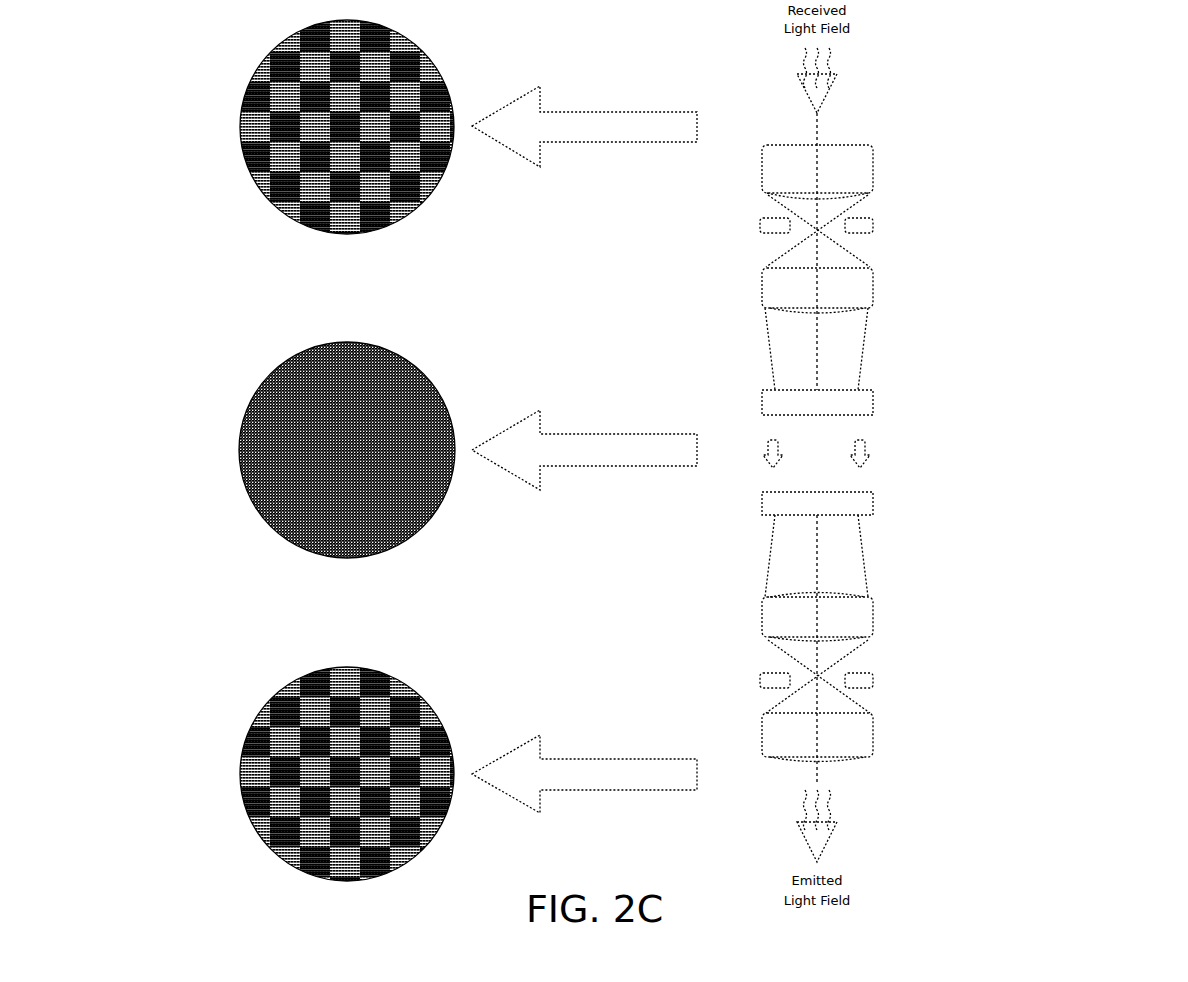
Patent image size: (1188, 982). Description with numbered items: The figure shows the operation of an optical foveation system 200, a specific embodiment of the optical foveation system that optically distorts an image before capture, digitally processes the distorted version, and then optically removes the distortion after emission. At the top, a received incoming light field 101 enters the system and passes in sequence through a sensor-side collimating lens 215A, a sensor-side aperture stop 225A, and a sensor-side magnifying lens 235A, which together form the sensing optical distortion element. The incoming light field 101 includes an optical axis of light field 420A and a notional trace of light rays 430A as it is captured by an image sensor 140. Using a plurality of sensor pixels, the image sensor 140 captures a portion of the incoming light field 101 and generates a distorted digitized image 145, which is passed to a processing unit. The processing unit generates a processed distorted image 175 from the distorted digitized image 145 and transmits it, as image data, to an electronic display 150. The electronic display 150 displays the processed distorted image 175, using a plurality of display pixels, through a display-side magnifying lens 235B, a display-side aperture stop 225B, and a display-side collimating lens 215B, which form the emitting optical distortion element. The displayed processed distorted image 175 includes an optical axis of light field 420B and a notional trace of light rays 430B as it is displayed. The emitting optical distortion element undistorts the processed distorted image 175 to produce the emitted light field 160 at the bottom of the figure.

The incoming light field 101 is at (232, 138).
The distorted digitized image 145 is at (232, 453).
The emitted light field 160 is at (232, 773).
The optical foveation system 200 is at (1080, 108).
The sensor-side collimating lens 215A is at (878, 173).
The sensor-side aperture stop 225A is at (878, 227).
The sensor-side magnifying lens 235A is at (878, 290).
The optical axis of light field 420A is at (812, 355).
The notional trace of light rays 430A is at (767, 367).
The image sensor 140 is at (878, 405).
The processed distorted image 175 is at (868, 460).
The electronic display 150 is at (878, 503).
The optical axis of light field 420B is at (812, 557).
The notional trace of light rays 430B is at (763, 573).
The display-side magnifying lens 235B is at (878, 620).
The display-side aperture stop 225B is at (878, 683).
The display-side collimating lens 215B is at (878, 744).